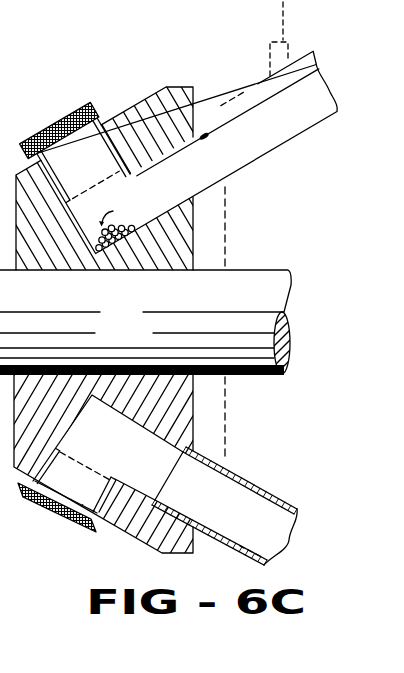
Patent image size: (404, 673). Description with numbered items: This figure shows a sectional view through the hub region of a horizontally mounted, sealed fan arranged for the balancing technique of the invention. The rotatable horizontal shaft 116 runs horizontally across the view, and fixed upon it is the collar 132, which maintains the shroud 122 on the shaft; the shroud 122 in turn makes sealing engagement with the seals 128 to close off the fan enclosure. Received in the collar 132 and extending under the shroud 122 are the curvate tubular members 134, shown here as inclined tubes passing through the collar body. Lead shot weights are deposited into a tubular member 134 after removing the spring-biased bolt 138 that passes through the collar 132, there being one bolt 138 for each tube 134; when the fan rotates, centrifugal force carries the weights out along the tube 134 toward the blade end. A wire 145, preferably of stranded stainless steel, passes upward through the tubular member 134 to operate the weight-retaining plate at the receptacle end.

The horizontal shaft 116 is at (140, 337).
The shroud 122 is at (249, 88).
The seals 128 is at (270, 57).
The collar 132 is at (149, 96).
The curvate tubular members 134 is at (234, 178).
The spring-biased bolts 138 is at (59, 116).
The wire 145 is at (226, 121).